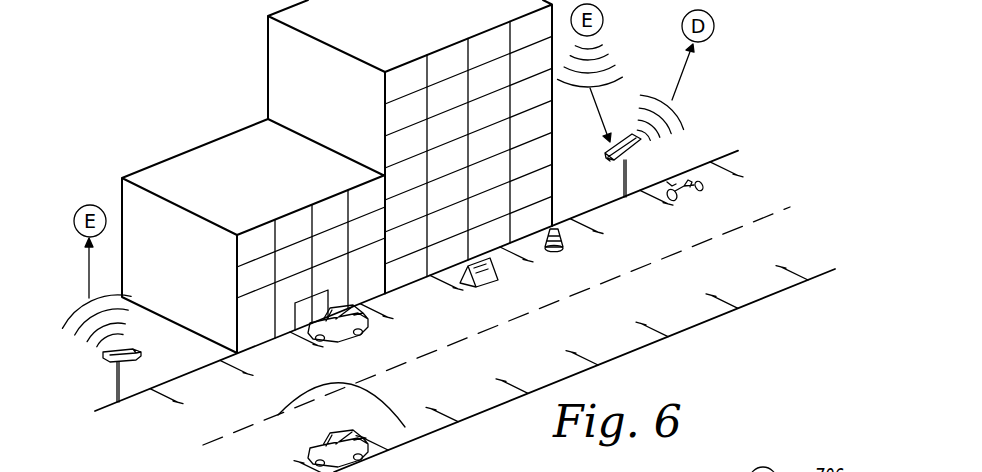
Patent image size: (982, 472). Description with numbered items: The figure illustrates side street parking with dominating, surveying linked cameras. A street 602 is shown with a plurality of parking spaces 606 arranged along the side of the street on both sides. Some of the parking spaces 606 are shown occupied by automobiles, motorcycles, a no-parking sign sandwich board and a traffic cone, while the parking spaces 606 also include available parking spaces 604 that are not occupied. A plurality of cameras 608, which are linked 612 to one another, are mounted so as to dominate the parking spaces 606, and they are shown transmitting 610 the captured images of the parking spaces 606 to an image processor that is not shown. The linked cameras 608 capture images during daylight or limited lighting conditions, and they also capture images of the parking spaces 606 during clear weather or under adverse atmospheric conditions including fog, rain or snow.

The street 602 is at (775, 238).
The available parking spaces 604 is at (612, 226).
The parking spaces 606 is at (312, 340).
The linked cameras 608 is at (117, 377).
The transmitting 610 is at (688, 70).
The linked 612 is at (88, 258).